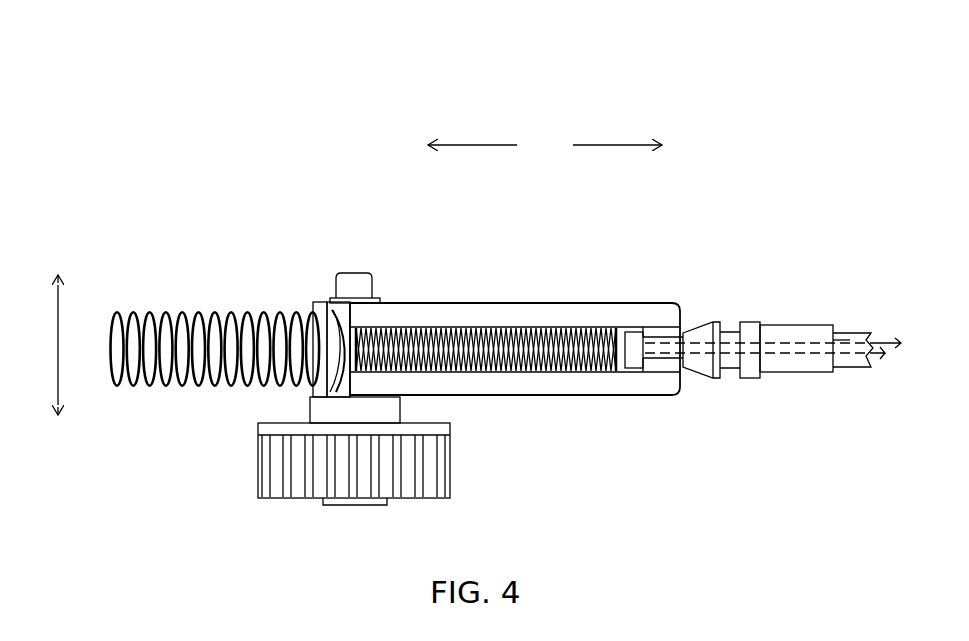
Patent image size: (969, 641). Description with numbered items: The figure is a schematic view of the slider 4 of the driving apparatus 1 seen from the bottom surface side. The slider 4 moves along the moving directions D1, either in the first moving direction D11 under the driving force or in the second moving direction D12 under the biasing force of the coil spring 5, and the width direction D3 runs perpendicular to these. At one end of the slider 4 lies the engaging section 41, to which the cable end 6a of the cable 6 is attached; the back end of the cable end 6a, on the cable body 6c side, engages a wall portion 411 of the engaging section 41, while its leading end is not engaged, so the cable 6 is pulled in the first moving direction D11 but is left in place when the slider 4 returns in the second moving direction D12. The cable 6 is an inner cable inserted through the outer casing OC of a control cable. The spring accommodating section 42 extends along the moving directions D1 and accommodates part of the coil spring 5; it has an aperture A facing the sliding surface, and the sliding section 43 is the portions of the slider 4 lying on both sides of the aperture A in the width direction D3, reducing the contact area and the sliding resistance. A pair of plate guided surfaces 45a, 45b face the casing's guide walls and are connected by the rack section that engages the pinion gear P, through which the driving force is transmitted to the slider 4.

The driving apparatus 1 is at (767, 196).
The slider 4 is at (580, 294).
The coil spring 5 is at (244, 314).
The cable 6 is at (886, 332).
The cable end 6a is at (622, 368).
The cable body 6c is at (888, 352).
The engaging section 41 is at (651, 322).
The spring accommodating section 42 is at (352, 352).
The sliding section 43 is at (500, 330).
The guided surface 45a is at (528, 396).
The guided surface 45b is at (528, 303).
The wall portion 411 is at (636, 372).
The aperture A is at (486, 376).
The pinion gear P is at (322, 302).
The outer casing OC is at (850, 362).
The moving directions D1 is at (633, 47).
The first moving direction D11 is at (470, 145).
The second moving direction D12 is at (618, 145).
The width direction D3 is at (60, 347).